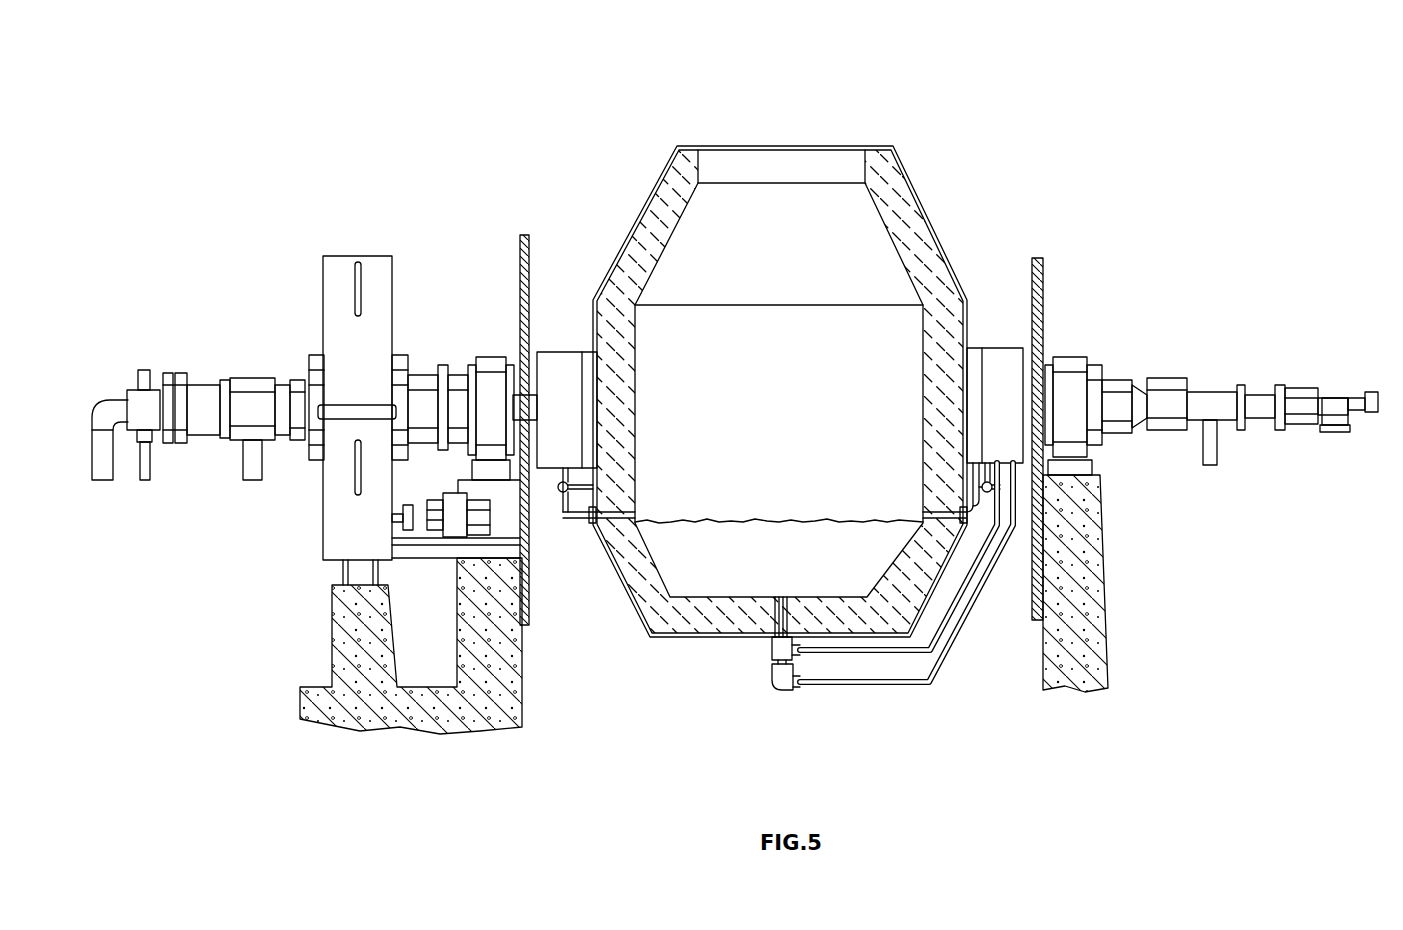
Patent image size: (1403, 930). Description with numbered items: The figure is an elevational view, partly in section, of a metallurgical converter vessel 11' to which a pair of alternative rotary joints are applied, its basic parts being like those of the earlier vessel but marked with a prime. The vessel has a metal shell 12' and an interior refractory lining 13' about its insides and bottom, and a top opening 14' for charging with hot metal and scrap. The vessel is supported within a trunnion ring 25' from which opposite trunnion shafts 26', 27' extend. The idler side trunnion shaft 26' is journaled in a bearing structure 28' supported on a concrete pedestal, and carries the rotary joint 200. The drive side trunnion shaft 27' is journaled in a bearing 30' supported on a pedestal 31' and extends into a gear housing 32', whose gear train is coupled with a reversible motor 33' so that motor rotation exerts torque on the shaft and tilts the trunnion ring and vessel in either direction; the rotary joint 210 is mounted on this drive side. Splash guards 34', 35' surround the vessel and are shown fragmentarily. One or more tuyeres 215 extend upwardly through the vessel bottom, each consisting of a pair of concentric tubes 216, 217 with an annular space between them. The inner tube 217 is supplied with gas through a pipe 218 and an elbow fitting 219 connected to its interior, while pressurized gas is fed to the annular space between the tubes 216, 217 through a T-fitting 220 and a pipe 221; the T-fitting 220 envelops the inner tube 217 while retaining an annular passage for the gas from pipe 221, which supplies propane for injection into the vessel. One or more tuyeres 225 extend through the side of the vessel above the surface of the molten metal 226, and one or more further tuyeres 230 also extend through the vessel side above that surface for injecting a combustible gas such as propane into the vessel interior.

The converter vessel 11' is at (779, 361).
The metal shell 12' is at (801, 391).
The refractory lining 13' is at (792, 391).
The top opening 14' is at (793, 128).
The trunnion ring 25' is at (567, 375).
The trunnion shaft 26' is at (1139, 369).
The trunnion shaft 27' is at (438, 370).
The bearing structure 28' is at (1080, 383).
The bearing 30' is at (489, 389).
The pedestal 31' is at (444, 646).
The gear housing 32' is at (375, 392).
The reversible motor 33' is at (441, 566).
The splash guard 34' is at (504, 405).
The splash guard 35' is at (1077, 429).
The rotary joint 200 is at (1207, 365).
The rotary joint 210 is at (192, 364).
The tuyere 215 is at (762, 643).
The outer tube 216 is at (787, 597).
The inner tube 217 is at (777, 597).
The pipe 218 is at (838, 688).
The elbow fitting 219 is at (780, 690).
The T-fitting 220 is at (772, 648).
The pipe 221 is at (875, 653).
The tuyere 225 is at (590, 522).
The molten metal 226 is at (728, 522).
The tuyere 230 is at (947, 540).